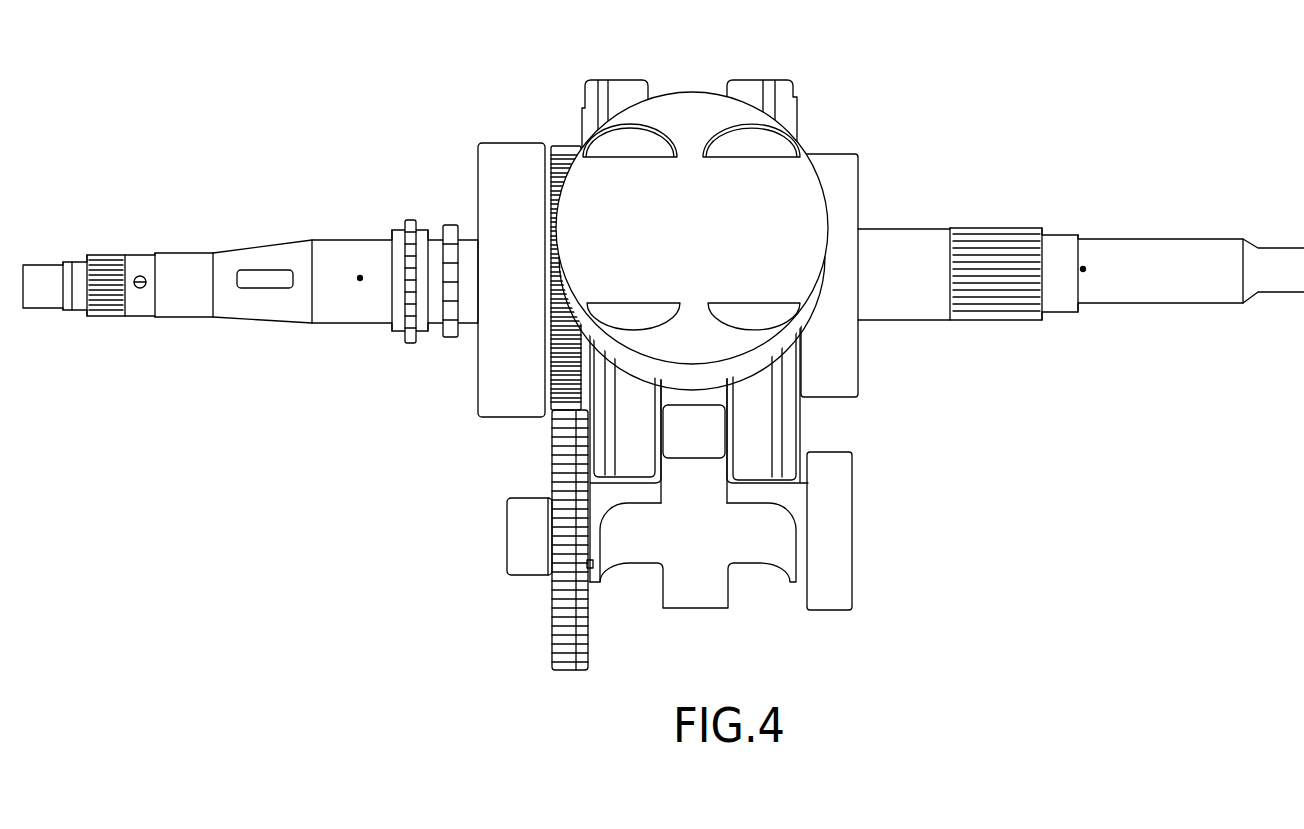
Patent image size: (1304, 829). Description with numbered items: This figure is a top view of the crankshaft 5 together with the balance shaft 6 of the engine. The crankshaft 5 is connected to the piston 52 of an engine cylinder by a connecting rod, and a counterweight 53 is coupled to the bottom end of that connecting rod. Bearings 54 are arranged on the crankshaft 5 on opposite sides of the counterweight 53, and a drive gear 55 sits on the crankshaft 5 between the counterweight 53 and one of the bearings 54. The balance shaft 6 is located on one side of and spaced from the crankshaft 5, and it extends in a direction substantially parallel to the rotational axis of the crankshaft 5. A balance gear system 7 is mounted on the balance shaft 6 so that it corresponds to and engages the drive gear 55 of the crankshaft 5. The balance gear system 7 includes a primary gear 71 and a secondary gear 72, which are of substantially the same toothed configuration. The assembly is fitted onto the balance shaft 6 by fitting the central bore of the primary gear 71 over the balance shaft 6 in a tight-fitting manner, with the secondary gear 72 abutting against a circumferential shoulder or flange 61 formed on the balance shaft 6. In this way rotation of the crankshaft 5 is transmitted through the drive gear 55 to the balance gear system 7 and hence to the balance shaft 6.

The crankshaft 5 is at (900, 222).
The piston 52 is at (687, 100).
The counterweight 53 is at (780, 95).
The bearings 54 is at (495, 173).
The drive gear 55 is at (565, 145).
The balance shaft 6 is at (525, 522).
The circumferential shoulder or flange 61 is at (593, 587).
The balance gear system 7 is at (554, 554).
The primary gear 71 is at (567, 645).
The secondary gear 72 is at (585, 652).